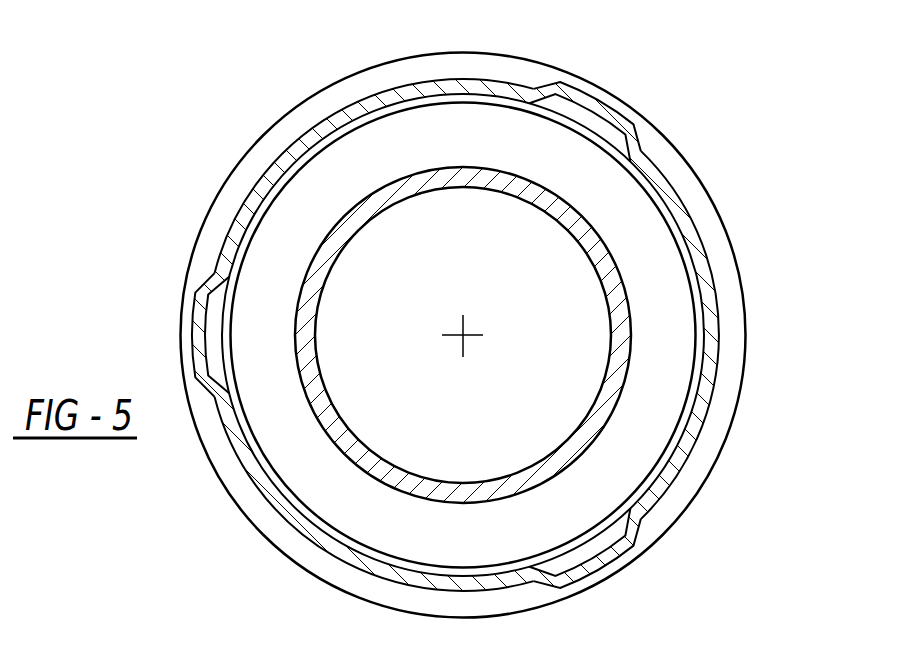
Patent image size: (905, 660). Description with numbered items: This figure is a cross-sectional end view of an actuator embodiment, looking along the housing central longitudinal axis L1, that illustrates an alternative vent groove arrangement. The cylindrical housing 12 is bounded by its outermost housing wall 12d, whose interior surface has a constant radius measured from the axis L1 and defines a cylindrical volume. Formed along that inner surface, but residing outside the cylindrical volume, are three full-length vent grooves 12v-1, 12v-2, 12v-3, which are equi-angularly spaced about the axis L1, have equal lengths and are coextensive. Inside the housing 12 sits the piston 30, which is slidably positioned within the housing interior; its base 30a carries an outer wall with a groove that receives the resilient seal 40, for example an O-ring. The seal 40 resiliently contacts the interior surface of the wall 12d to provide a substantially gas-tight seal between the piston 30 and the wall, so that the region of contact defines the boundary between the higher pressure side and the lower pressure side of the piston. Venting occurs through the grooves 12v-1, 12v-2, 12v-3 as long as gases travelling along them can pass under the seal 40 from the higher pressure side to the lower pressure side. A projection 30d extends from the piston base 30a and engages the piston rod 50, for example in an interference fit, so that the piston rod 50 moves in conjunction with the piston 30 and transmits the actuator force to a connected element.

The housing 12 is at (457, 60).
The outermost housing wall 12d is at (395, 97).
The vent groove 12v-1 is at (590, 118).
The vent groove 12v-2 is at (208, 334).
The vent groove 12v-3 is at (592, 550).
The piston 30 is at (439, 322).
The base 30a is at (368, 157).
The projection 30d is at (385, 293).
The resilient seal 40 is at (258, 452).
The piston rod 50 is at (613, 295).
The central longitudinal axis L1 is at (460, 340).